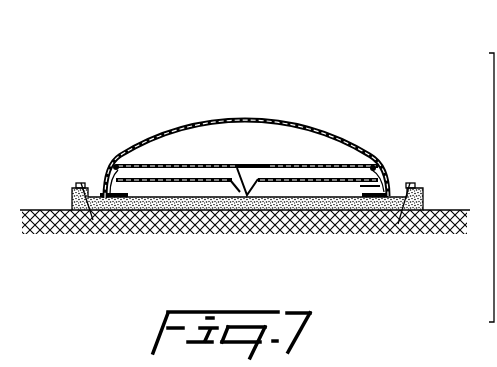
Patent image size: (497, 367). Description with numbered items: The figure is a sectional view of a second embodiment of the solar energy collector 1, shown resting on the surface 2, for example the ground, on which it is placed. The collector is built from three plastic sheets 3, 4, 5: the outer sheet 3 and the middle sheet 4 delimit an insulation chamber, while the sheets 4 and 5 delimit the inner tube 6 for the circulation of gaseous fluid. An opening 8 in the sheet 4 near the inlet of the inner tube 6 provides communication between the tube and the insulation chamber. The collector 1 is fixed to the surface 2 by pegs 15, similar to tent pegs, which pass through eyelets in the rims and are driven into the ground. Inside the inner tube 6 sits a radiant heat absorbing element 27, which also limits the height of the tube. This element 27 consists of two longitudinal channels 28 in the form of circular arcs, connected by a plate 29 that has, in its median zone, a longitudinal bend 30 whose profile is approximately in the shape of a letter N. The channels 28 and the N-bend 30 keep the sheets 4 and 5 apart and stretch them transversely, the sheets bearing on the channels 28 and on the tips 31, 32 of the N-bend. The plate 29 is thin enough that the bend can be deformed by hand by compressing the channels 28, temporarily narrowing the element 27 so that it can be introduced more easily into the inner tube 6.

The solar energy collector 1 is at (383, 80).
The surface 2 is at (43, 209).
The plastic sheet 3 is at (326, 138).
The plastic sheet 4 is at (163, 165).
The plastic sheet 5 is at (186, 204).
The inner tube 6 is at (310, 177).
The opening 8 is at (249, 172).
The pegs 15 is at (410, 187).
The radiant heat absorbing element 27 is at (379, 170).
The longitudinal channels 28 is at (116, 163).
The plate 29 is at (212, 178).
The longitudinal bend 30 is at (254, 172).
The tip 31 is at (243, 172).
The tip 32 is at (247, 200).